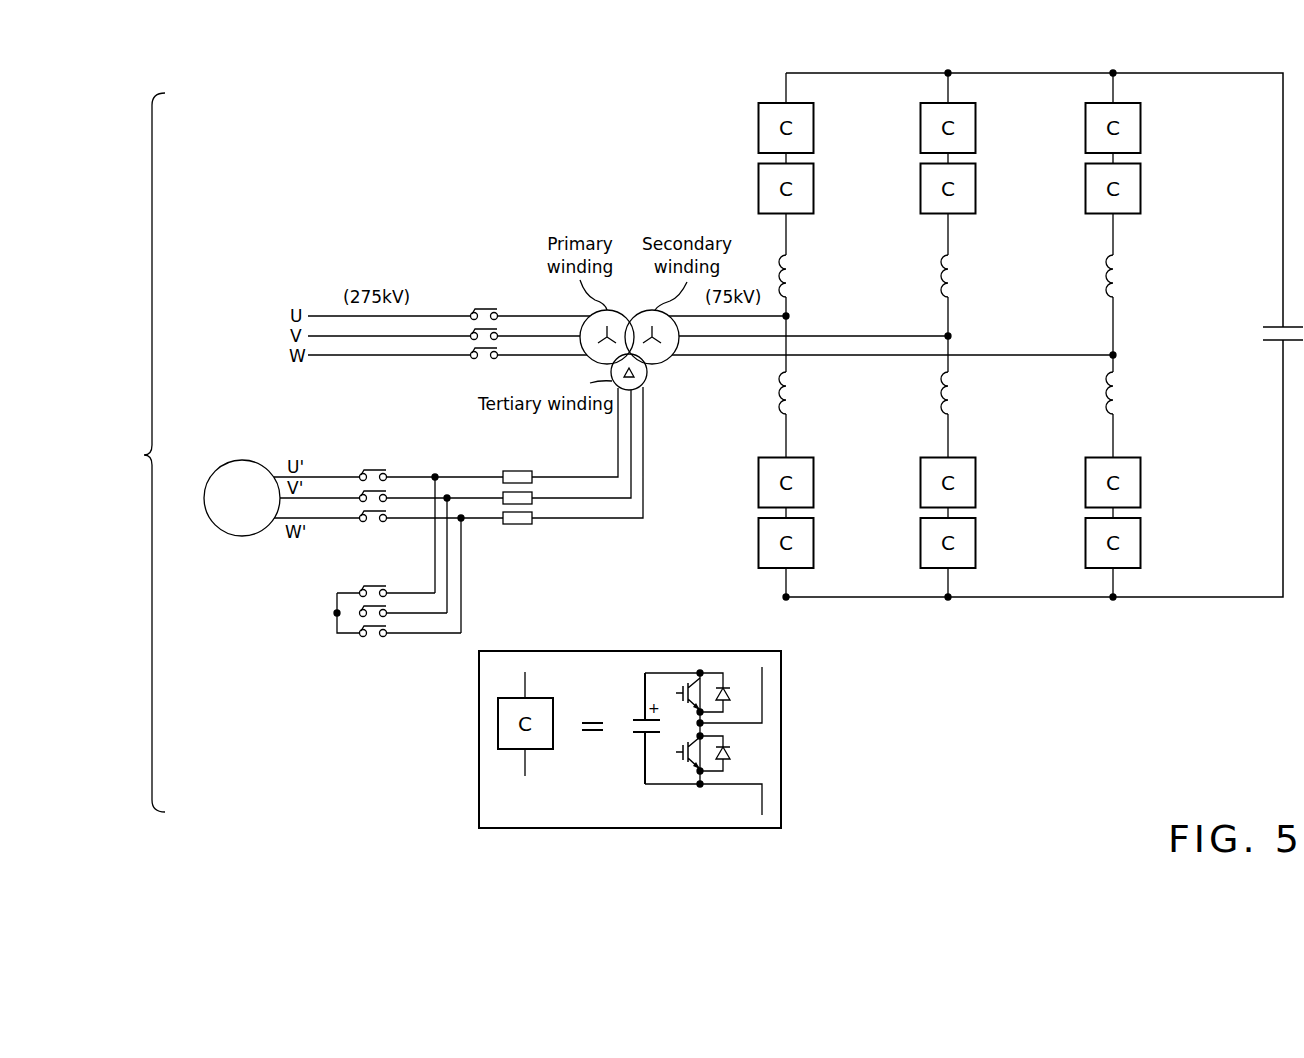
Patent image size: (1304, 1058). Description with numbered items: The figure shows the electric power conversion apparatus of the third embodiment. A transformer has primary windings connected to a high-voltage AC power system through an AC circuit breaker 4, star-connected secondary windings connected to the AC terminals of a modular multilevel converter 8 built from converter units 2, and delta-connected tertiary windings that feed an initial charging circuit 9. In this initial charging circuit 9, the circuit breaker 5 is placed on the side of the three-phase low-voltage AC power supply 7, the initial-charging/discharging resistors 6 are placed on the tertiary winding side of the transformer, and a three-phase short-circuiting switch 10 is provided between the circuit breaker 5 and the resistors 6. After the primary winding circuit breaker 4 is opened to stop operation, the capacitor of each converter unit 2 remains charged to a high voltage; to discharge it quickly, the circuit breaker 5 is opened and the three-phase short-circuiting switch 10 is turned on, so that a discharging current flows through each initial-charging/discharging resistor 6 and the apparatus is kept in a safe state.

The converter unit 2 is at (813, 128).
The AC circuit breaker 4 is at (477, 300).
The circuit breaker 5 is at (376, 530).
The initial-charging/discharging resistors 6 is at (520, 535).
The low-voltage AC power supply 7 is at (242, 460).
The modular multilevel converter 8 is at (996, 335).
The initial charging circuit 9 is at (655, 432).
The three-phase short-circuiting switch 10 is at (376, 642).